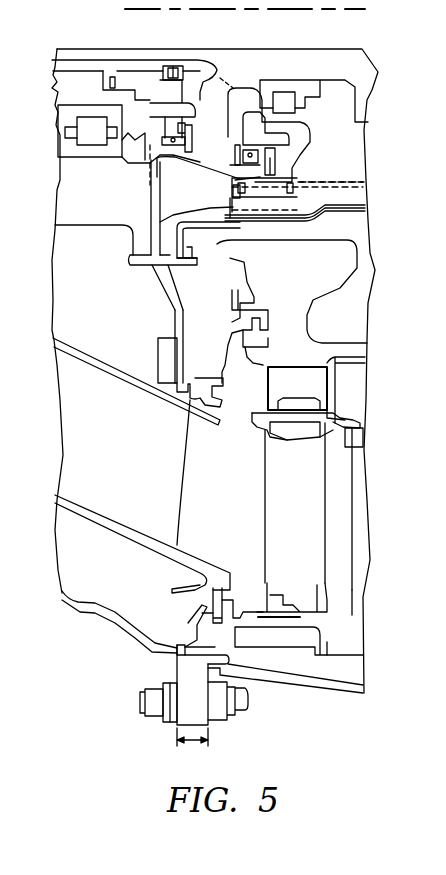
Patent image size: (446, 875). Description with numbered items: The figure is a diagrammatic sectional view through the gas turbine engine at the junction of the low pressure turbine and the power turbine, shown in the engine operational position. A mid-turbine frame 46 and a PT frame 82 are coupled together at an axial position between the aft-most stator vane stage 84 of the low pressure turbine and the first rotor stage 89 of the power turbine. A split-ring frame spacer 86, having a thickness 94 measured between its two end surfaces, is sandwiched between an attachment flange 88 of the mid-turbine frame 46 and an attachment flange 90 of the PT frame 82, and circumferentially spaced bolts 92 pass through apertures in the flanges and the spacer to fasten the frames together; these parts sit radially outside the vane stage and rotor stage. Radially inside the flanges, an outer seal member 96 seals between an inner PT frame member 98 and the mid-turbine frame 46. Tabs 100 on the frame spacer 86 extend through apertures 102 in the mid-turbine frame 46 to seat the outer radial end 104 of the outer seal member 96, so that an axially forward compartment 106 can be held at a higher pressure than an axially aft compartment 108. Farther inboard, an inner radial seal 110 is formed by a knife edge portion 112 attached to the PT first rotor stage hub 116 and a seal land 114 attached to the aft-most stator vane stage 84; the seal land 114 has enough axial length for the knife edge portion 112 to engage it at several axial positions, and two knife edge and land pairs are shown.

The mid-turbine frame 46 is at (74, 601).
The PT frame 82 is at (343, 688).
The aft-most stator vane stage 84 is at (148, 465).
The split-ring frame spacer 86 is at (143, 702).
The attachment flange 88 is at (163, 722).
The first rotor stage 89 is at (332, 322).
The attachment flange 90 is at (212, 725).
The bolts 92 is at (142, 708).
The thickness 94 is at (206, 746).
The outer seal member 96 is at (192, 625).
The inner PT frame member 98 is at (236, 620).
The tabs 100 is at (175, 648).
The apertures 102 is at (185, 658).
The outer radial end 104 is at (178, 637).
The axially forward compartment 106 is at (112, 559).
The axially aft compartment 108 is at (277, 655).
The inner radial seal 110 is at (237, 409).
The knife edge portion 112 is at (230, 368).
The seal land 114 is at (207, 380).
The PT first rotor stage hub 116 is at (311, 276).